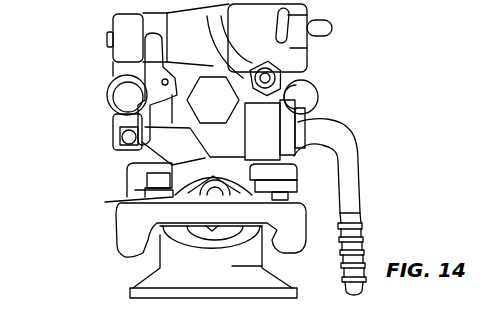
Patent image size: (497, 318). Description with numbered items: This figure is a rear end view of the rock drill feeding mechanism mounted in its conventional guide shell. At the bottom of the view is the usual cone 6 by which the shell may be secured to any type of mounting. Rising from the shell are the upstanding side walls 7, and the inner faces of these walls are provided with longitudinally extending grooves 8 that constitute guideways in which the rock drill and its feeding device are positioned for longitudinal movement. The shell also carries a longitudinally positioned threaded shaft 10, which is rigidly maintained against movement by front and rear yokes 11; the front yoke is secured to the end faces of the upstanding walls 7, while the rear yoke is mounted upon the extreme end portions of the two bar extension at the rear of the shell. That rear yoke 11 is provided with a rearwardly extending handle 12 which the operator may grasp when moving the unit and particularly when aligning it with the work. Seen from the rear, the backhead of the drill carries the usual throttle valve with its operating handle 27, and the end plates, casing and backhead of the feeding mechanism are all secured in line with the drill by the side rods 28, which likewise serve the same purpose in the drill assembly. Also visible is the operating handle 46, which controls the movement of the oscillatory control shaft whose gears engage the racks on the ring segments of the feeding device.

The cone 6 is at (163, 280).
The upstanding side walls 7 is at (128, 187).
The longitudinally extending grooves 8 is at (138, 168).
The threaded shaft 10 is at (280, 196).
The yokes 11 is at (182, 213).
The handle 12 is at (150, 215).
The operating handle 27 is at (140, 108).
The side rods 28 is at (120, 97).
The operating handle 46 is at (313, 28).